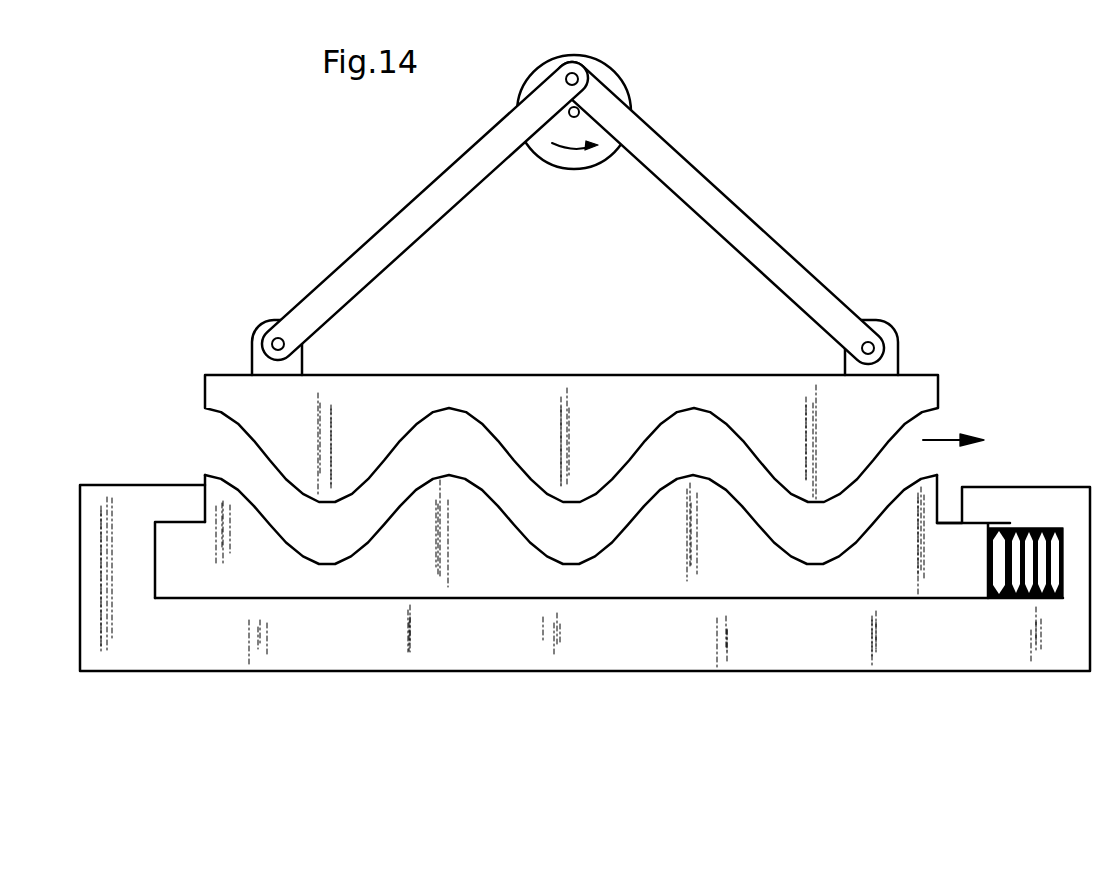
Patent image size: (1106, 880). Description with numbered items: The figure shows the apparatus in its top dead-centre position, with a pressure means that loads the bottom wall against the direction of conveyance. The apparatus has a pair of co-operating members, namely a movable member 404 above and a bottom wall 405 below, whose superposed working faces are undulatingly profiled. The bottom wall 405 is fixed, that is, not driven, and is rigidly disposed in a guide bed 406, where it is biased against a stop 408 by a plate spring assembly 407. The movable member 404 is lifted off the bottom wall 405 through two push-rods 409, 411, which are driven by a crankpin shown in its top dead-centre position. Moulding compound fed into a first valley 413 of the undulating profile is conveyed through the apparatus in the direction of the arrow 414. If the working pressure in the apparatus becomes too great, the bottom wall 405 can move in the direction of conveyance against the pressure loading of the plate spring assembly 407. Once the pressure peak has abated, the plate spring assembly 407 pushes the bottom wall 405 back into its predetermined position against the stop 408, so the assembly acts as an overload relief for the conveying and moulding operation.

The movable member 404 is at (580, 395).
The bottom wall 405 is at (654, 588).
The guide bed 406 is at (883, 650).
The plate spring assembly 407 is at (1040, 530).
The stop 408 is at (203, 496).
The push-rod 409 is at (392, 240).
The push-rod 411 is at (706, 187).
The first valley 413 is at (314, 558).
The arrow 414 is at (945, 438).